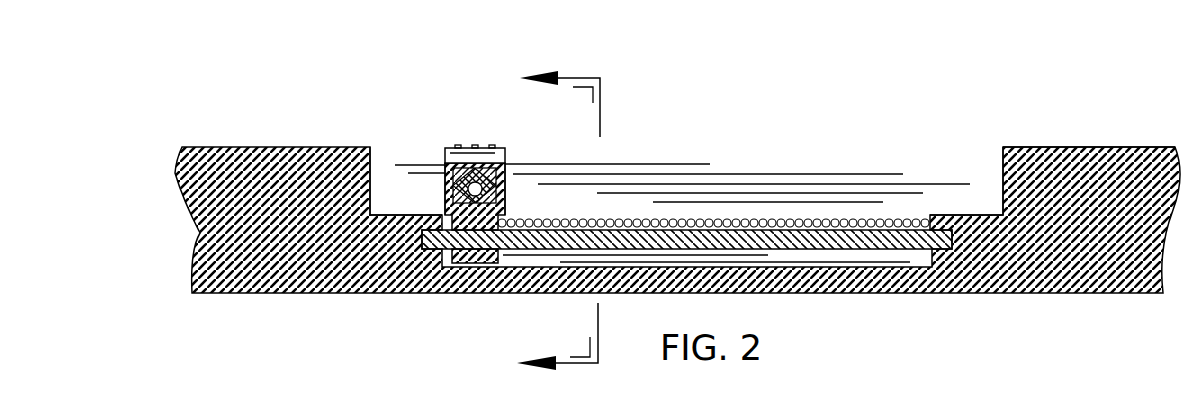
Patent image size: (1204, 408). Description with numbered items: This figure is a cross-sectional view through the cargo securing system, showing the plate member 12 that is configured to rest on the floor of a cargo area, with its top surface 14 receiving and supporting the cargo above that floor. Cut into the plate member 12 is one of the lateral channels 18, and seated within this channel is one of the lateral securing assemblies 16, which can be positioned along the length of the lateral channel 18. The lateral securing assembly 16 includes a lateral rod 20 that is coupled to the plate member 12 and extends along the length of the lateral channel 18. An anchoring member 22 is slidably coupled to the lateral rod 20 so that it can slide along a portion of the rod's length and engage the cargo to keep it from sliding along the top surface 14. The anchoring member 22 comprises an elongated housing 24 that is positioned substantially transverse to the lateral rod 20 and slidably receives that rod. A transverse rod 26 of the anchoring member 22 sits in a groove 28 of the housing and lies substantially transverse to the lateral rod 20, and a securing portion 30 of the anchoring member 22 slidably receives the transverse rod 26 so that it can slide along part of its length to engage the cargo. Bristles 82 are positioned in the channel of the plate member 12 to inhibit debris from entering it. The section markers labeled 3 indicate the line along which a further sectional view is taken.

The plate member 12 is at (1067, 273).
The top surface 14 is at (1085, 148).
The lateral securing assembly 16 is at (680, 115).
The lateral channel 18 is at (808, 167).
The lateral rod 20 is at (870, 246).
The anchoring member 22 is at (443, 172).
The elongated housing 24 is at (507, 180).
The transverse rod 26 is at (478, 196).
The groove 28 is at (453, 192).
The securing portion 30 is at (483, 148).
The bristles 82 is at (933, 218).
The section line 3- 3 is at (551, 220).